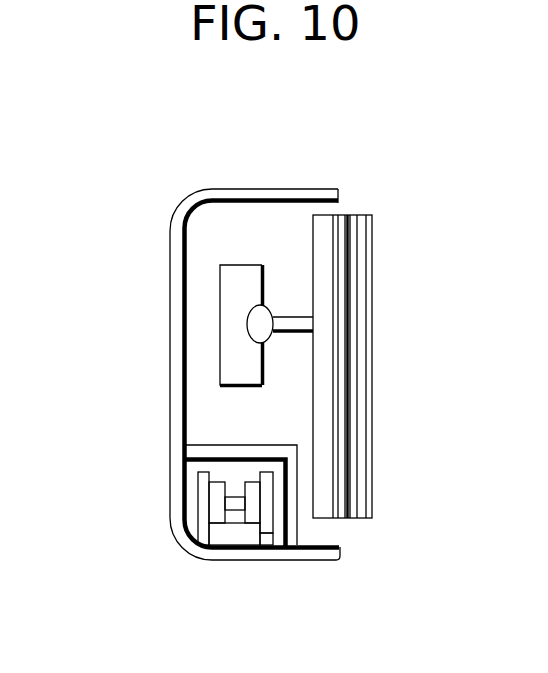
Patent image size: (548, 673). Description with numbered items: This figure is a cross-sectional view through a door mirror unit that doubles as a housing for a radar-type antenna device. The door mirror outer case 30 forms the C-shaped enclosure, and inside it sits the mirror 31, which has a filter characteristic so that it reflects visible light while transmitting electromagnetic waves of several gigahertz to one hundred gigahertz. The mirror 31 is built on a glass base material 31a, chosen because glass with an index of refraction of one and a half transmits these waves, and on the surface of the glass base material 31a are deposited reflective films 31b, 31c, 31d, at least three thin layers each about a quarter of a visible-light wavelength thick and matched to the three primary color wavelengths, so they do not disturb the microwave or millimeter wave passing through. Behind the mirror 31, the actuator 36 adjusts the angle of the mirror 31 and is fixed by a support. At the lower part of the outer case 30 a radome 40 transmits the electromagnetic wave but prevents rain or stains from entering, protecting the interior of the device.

The door mirror outer case 30 is at (180, 205).
The mirror 31 is at (283, 335).
The base material 31a is at (323, 215).
The reflective film 31b is at (340, 215).
The reflective film 31c is at (352, 215).
The reflective film 31d is at (372, 242).
The actuator 36 is at (220, 327).
The radome 40 is at (297, 530).